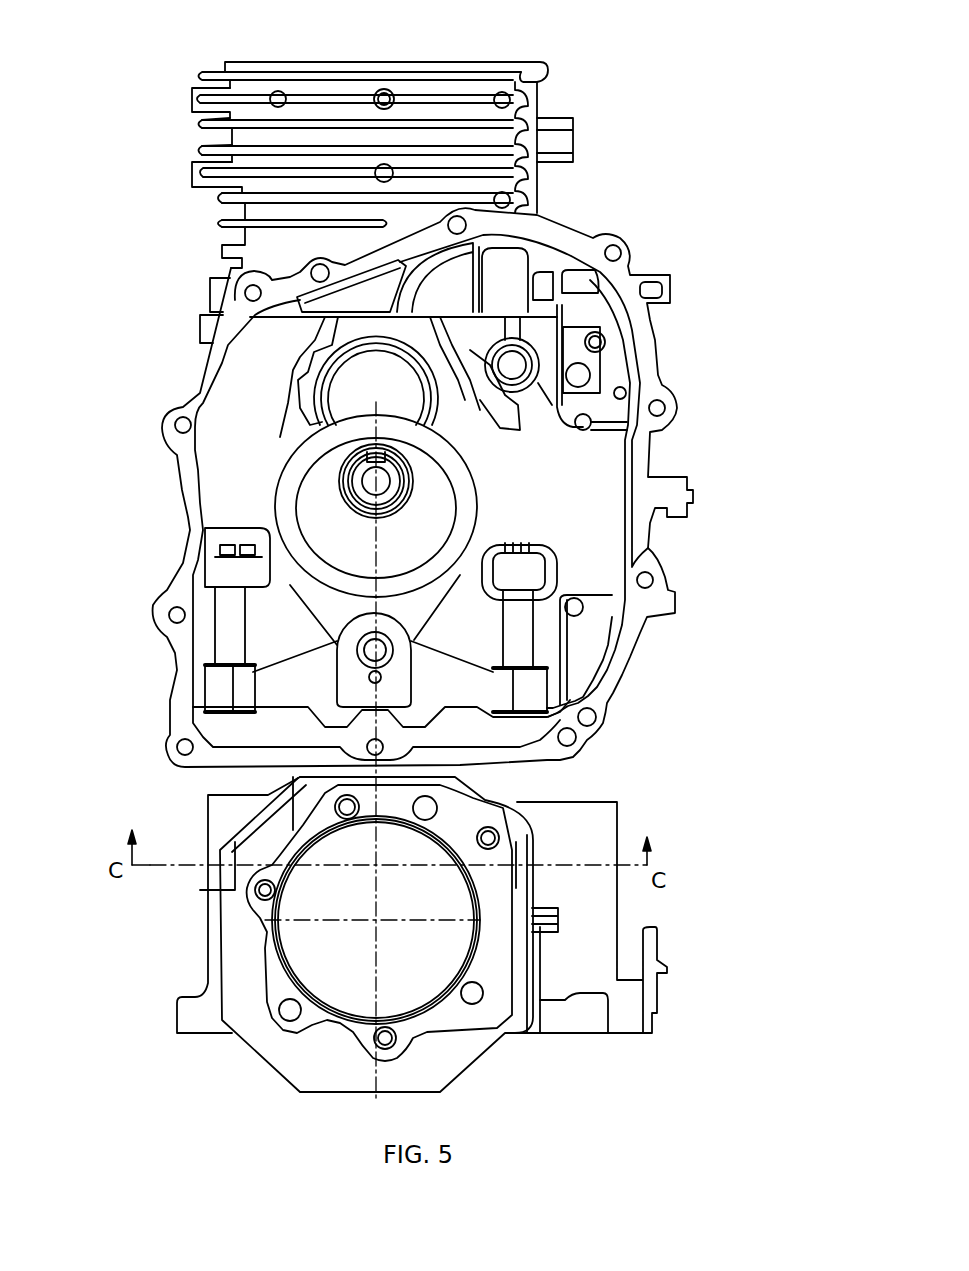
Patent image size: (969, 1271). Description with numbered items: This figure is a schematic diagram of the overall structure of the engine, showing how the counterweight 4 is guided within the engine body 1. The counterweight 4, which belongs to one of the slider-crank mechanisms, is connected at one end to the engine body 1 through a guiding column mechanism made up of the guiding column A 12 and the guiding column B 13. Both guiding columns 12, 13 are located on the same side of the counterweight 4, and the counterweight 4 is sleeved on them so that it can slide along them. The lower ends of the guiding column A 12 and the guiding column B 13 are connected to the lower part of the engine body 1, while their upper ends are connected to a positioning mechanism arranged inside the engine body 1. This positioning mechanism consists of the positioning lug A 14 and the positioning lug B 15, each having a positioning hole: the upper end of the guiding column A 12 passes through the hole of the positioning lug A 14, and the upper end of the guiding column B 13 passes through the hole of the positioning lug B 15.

The engine body 1 is at (245, 398).
The counterweight 4 is at (287, 698).
The guiding column A 12 is at (518, 629).
The guiding column B 13 is at (235, 633).
The positioning lug A 14 is at (550, 567).
The positioning lug B 15 is at (233, 568).